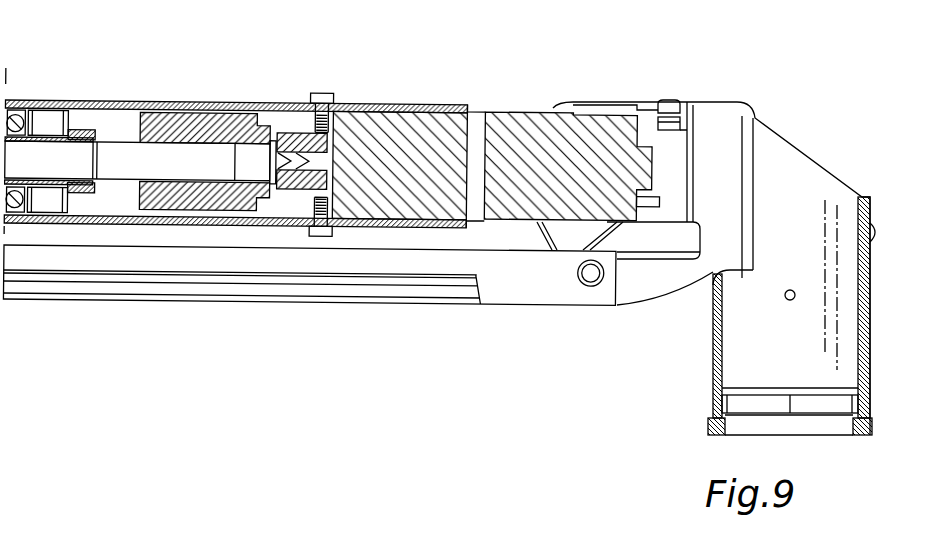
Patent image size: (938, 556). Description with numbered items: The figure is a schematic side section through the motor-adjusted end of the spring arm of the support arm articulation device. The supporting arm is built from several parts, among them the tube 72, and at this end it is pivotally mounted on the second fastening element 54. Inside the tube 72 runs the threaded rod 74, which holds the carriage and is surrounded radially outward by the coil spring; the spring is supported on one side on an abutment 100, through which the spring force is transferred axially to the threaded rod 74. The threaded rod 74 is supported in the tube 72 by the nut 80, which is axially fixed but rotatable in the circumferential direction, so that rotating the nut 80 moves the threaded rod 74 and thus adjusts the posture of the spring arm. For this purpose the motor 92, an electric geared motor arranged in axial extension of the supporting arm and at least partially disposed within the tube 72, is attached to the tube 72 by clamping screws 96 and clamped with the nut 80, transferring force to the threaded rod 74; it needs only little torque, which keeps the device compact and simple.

The second fastening element 54 is at (798, 175).
The tube 72 is at (370, 100).
The threaded rod 74 is at (117, 160).
The nut 80 is at (205, 122).
The motor 92 is at (513, 150).
The clamping screw 96 is at (322, 90).
The abutment 100 is at (45, 120).